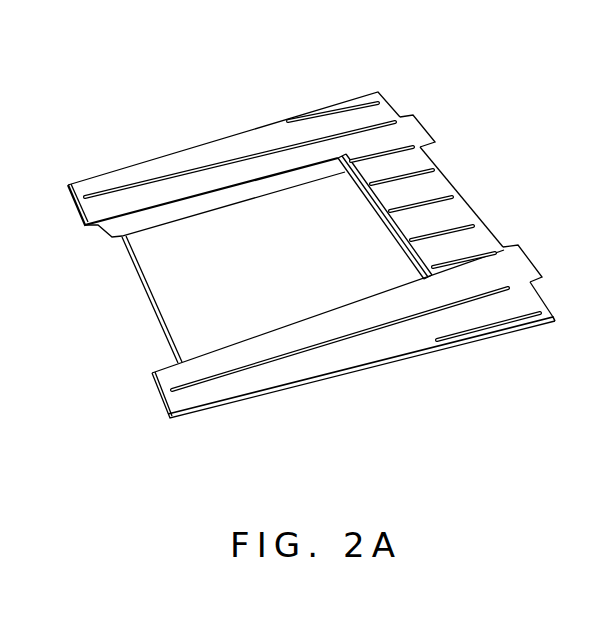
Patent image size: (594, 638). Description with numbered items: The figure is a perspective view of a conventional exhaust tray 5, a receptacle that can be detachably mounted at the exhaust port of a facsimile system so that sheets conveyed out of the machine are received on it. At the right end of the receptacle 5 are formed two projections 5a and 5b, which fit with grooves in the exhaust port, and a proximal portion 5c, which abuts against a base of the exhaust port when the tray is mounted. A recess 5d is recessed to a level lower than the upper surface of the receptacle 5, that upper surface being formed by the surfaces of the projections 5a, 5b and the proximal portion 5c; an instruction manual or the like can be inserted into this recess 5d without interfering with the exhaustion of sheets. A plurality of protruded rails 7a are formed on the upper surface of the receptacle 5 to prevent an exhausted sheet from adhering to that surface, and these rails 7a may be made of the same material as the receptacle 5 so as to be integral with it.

The exhaust tray 5 is at (288, 392).
The projection 5a is at (415, 130).
The projection 5b is at (523, 258).
The proximal portion 5c is at (493, 340).
The recess 5d is at (165, 296).
The protruded rails 7a is at (197, 168).